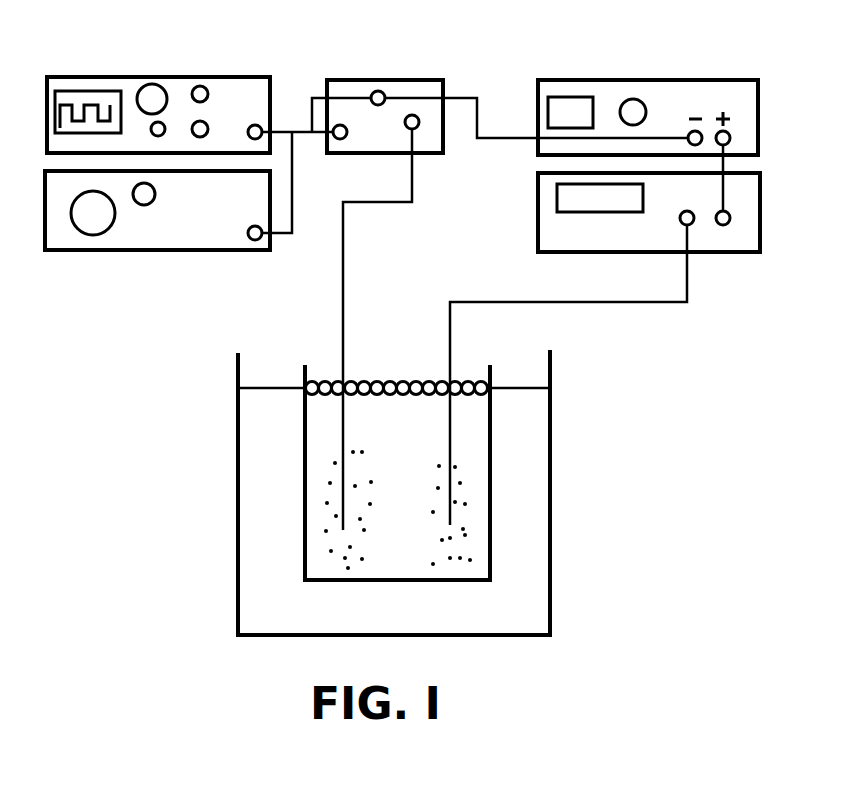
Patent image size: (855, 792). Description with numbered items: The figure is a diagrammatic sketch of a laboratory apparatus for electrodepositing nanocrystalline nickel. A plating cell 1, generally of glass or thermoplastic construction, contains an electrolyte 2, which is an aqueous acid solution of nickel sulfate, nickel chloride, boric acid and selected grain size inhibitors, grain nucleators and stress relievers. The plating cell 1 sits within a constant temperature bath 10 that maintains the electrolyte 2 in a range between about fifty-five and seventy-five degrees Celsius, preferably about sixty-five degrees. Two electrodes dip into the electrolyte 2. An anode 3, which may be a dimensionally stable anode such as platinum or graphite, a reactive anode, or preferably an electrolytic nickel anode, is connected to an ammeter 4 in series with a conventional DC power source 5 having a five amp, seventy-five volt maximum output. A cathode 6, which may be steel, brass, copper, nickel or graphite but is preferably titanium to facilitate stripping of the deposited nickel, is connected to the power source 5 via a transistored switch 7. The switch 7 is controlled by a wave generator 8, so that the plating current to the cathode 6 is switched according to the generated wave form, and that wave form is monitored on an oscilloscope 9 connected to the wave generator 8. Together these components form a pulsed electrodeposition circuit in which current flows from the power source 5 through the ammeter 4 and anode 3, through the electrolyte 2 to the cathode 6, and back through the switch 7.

The plating cell 1 is at (448, 583).
The electrolyte 2 is at (410, 506).
The anode 3 is at (450, 423).
The ammeter 4 is at (720, 252).
The DC power source 5 is at (667, 80).
The cathode 6 is at (345, 414).
The transistored switch 7 is at (420, 80).
The wave generator 8 is at (140, 251).
The oscilloscope 9 is at (184, 77).
The constant temperature bath 10 is at (286, 579).